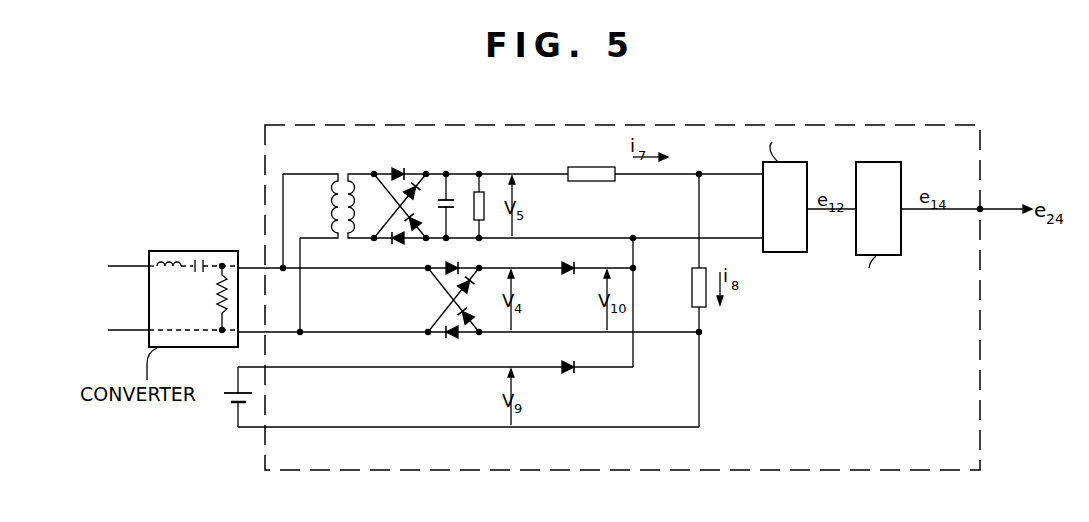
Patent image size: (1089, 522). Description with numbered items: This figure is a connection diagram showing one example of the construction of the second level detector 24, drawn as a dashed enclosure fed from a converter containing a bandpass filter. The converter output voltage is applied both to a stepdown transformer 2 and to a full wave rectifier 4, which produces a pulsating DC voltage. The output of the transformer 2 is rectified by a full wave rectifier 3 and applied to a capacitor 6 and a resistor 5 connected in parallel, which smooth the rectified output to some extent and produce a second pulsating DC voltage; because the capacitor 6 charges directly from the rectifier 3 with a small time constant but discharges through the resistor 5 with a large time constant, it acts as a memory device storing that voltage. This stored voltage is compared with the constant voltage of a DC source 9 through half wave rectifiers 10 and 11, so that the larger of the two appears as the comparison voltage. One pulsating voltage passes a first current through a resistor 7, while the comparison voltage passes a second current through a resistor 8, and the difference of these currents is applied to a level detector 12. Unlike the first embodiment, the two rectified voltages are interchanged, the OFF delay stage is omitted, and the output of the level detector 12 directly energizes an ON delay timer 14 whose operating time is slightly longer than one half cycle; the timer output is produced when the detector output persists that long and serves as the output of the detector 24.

The stepdown transformer 2 is at (346, 172).
The full wave rectifier 3 is at (400, 172).
The full wave rectifier 4 is at (440, 300).
The resistor 5 is at (485, 200).
The capacitor 6 is at (460, 185).
The resistor 7 is at (589, 182).
The resistor 8 is at (690, 292).
The DC source of constant voltage 9 is at (231, 402).
The half wave rectifier 10 is at (567, 276).
The half wave rectifier 11 is at (567, 375).
The level detector 12 is at (849, 193).
The ON delay timer 14 is at (904, 240).
The level detector 24 is at (980, 345).